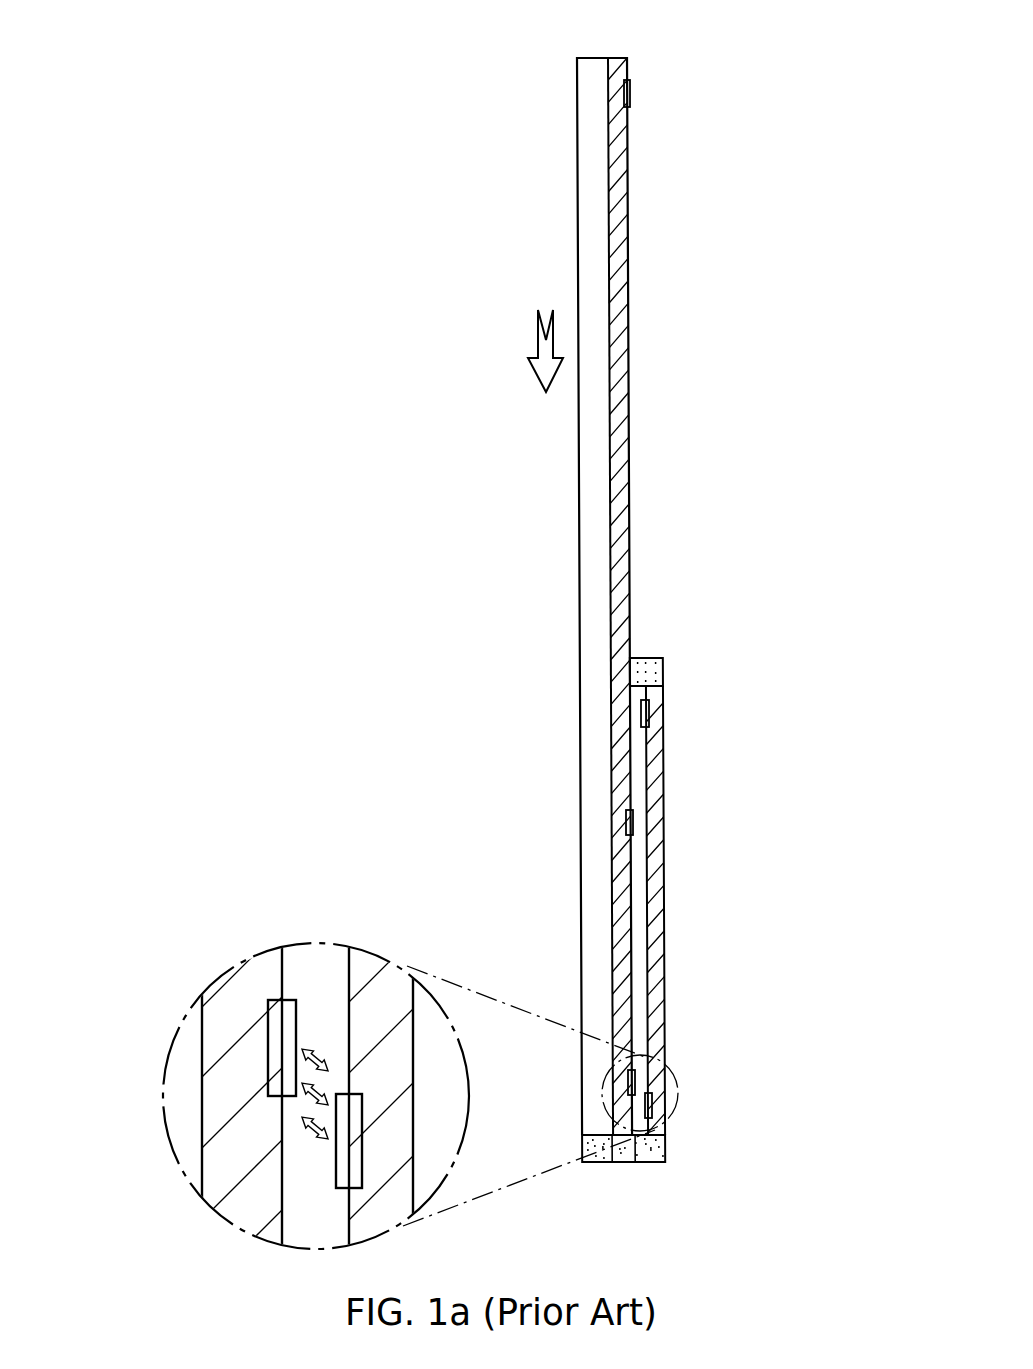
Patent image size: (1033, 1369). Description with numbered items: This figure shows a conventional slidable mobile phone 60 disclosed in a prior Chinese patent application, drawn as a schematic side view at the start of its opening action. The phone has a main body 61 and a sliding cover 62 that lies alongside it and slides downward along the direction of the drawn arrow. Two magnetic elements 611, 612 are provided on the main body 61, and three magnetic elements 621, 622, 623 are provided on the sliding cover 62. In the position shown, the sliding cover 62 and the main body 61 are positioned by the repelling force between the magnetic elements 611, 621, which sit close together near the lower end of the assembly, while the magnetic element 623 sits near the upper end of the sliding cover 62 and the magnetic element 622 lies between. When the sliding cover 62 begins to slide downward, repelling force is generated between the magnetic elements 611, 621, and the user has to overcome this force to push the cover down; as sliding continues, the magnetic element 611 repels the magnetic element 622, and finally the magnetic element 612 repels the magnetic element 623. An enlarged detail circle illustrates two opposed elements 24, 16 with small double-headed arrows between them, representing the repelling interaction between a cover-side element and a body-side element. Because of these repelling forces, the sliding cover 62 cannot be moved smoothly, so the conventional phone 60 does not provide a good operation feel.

The slidable mobile phone 60 is at (330, 25).
The main body 61 is at (682, 907).
The sliding cover 62 is at (552, 598).
The magnetic element 611 is at (653, 1106).
The magnetic element 612 is at (650, 712).
The magnetic element 621 is at (636, 1082).
The magnetic element 622 is at (634, 821).
The magnetic element 623 is at (631, 93).
The magnet 24 is at (285, 1049).
The sensor 16 is at (345, 1165).